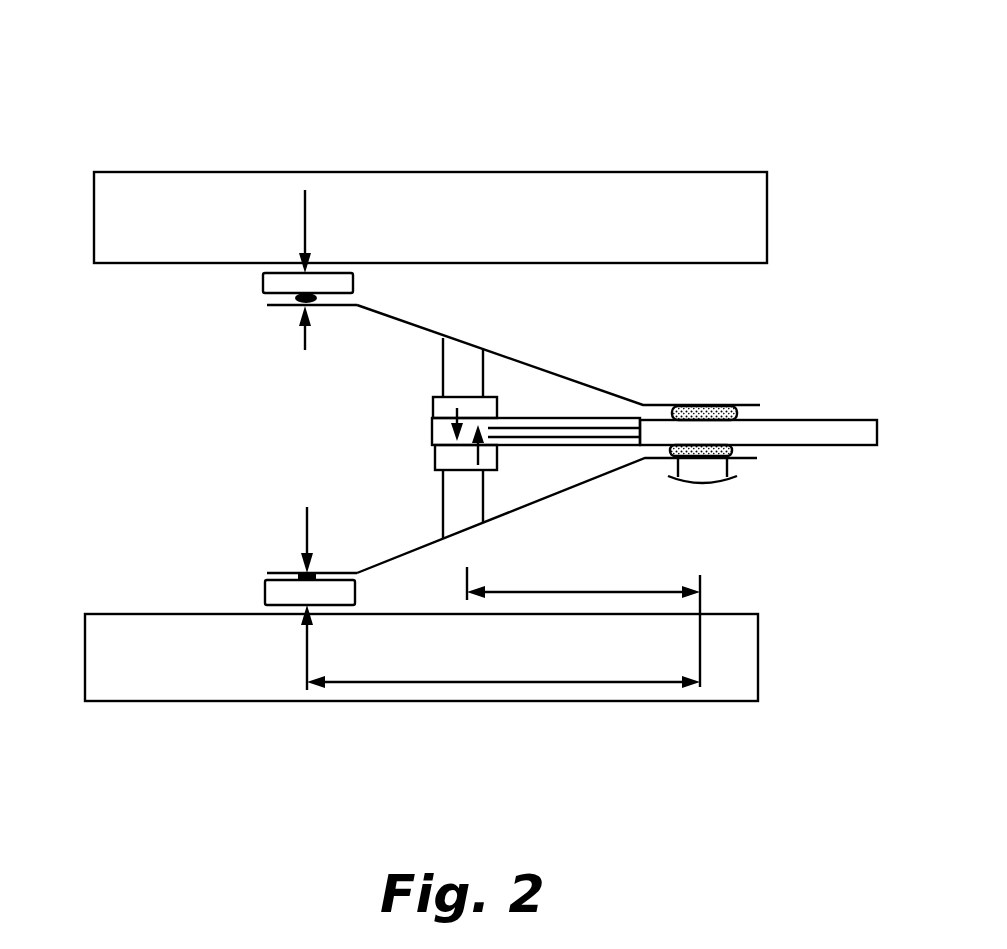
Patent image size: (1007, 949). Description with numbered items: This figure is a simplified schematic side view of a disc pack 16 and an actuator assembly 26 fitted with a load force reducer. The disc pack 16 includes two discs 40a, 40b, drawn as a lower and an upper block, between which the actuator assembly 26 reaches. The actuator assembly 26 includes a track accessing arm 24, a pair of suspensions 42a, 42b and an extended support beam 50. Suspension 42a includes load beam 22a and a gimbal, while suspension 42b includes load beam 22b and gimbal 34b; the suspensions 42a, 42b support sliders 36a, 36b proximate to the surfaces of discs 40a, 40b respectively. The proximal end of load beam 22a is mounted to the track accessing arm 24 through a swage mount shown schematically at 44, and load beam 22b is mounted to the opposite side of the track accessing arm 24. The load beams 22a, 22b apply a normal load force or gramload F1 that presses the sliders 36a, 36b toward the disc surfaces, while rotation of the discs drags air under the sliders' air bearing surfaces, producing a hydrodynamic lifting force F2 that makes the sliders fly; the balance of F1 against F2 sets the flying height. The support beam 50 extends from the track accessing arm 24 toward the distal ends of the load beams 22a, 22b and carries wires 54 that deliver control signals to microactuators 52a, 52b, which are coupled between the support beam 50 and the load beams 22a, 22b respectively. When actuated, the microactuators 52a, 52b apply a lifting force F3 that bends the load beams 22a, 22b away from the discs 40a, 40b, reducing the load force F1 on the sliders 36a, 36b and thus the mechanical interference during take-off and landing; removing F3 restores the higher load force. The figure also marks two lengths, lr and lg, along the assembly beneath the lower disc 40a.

The disc pack 16 is at (457, 100).
The disc 40b is at (177, 172).
The disc 40a is at (138, 701).
The slider 36b is at (263, 283).
The slider 36a is at (265, 592).
The gimbal 34b is at (274, 310).
The load beam 22b is at (580, 383).
The load beam 22a is at (590, 480).
The suspension 42b is at (548, 325).
The suspension 42a is at (570, 522).
The microactuator 52b is at (418, 391).
The microactuator 52a is at (421, 466).
The support beam 50 is at (548, 418).
The wires 54 is at (594, 437).
The track accessing arm 24 is at (825, 420).
The actuator assembly 26 is at (833, 350).
The swage mount 44 is at (775, 475).
The load force F1 is at (304, 340).
The hydrodynamic lifting force F2 is at (305, 197).
The lifting force F3 is at (457, 408).
The length lr is at (583, 626).
The length lg is at (503, 667).